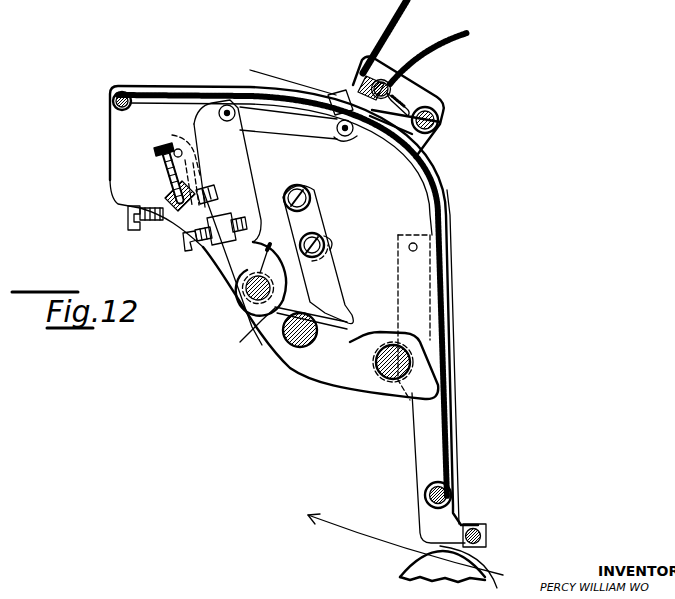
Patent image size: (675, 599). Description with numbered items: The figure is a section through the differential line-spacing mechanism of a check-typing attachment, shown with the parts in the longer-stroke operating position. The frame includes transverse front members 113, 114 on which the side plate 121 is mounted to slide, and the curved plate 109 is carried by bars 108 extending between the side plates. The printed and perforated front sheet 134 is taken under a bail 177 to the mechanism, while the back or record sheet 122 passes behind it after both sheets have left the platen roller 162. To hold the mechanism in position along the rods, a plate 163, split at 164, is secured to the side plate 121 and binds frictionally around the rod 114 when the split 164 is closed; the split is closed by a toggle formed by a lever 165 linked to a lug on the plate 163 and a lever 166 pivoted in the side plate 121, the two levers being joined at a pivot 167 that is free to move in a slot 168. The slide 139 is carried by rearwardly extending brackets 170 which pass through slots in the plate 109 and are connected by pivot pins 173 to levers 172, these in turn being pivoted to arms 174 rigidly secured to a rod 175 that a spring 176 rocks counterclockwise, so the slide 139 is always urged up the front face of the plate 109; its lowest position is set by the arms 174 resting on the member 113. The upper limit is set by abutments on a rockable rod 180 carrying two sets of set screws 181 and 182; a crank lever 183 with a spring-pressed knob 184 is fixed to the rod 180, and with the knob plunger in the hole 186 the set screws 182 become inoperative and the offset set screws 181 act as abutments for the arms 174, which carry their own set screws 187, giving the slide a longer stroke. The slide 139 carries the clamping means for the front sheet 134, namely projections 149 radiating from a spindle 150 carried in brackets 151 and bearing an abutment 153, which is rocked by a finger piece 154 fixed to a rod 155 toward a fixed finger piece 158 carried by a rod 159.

The bars 108 is at (113, 103).
The curved plate 109 is at (265, 92).
The transverse front member 113 is at (376, 370).
The transverse front member 114 is at (292, 348).
The side plate 121 is at (110, 160).
The back sheet 122 is at (384, 543).
The front sheet 134 is at (289, 61).
The slide 139 is at (338, 90).
The projections 149 is at (433, 110).
The spindle 150 is at (443, 114).
The brackets 151 is at (366, 58).
The abutment 153 is at (410, 107).
The finger piece 154 is at (440, 55).
The rod 155 is at (386, 86).
The fixed finger piece 158 is at (400, 10).
The rod 159 is at (390, 79).
The platen roller 162 is at (406, 566).
The plate 163 is at (378, 333).
The split 164 is at (330, 333).
The lever 165 is at (332, 270).
The lever 166 is at (313, 205).
The pivot 167 is at (326, 252).
The slot 168 is at (332, 243).
The brackets 170 is at (364, 134).
The levers 172 is at (289, 133).
The pivot pins 173 is at (335, 140).
The arms 174 is at (257, 172).
The rod 175 is at (245, 295).
The spring 176 is at (255, 332).
The bail 177 is at (482, 533).
The rod 180 is at (165, 200).
The set screws 181 is at (208, 194).
The set screws 182 is at (160, 151).
The crank lever 183 is at (199, 165).
The knob 184 is at (195, 147).
The hole 186 is at (179, 149).
The set screws 187 is at (198, 249).